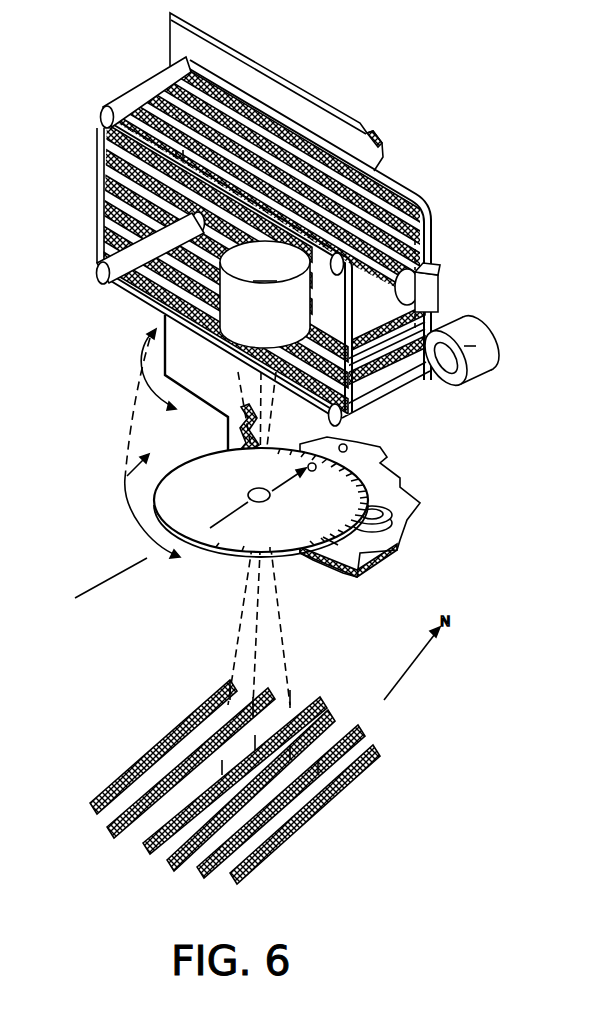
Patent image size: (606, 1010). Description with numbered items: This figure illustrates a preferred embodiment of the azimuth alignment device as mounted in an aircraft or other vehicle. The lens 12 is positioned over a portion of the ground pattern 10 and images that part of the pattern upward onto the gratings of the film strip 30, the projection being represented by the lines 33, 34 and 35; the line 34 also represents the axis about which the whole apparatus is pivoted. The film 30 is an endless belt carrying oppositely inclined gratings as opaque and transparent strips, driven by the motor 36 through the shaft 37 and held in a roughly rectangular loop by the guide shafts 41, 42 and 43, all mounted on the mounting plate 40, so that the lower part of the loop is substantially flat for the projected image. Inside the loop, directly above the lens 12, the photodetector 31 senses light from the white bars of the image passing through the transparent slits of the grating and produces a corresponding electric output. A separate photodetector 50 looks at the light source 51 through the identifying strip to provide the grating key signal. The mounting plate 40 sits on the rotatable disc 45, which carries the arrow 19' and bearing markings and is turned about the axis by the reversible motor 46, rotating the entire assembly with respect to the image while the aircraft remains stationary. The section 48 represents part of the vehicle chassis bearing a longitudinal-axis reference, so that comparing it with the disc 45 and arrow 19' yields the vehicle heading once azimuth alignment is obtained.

The ground pattern 10 is at (128, 757).
The lens 12 is at (248, 496).
The arrow 19' is at (291, 492).
The film strip 30 is at (433, 212).
The photodetector 31 is at (257, 259).
The projection line 33 is at (272, 424).
The projection line and axis 34 is at (252, 392).
The projection line 35 is at (238, 378).
The motor 36 is at (497, 340).
The shaft 37 is at (326, 413).
The mounting plate 40 is at (286, 82).
The guide shaft 41 is at (99, 277).
The guide shaft 42 is at (100, 118).
The guide shaft 43 is at (337, 275).
The rotatable disc 45 is at (220, 545).
The motor 46 is at (392, 520).
The section 48 is at (421, 503).
The photodetector 50 is at (476, 256).
The light source 51 is at (439, 292).